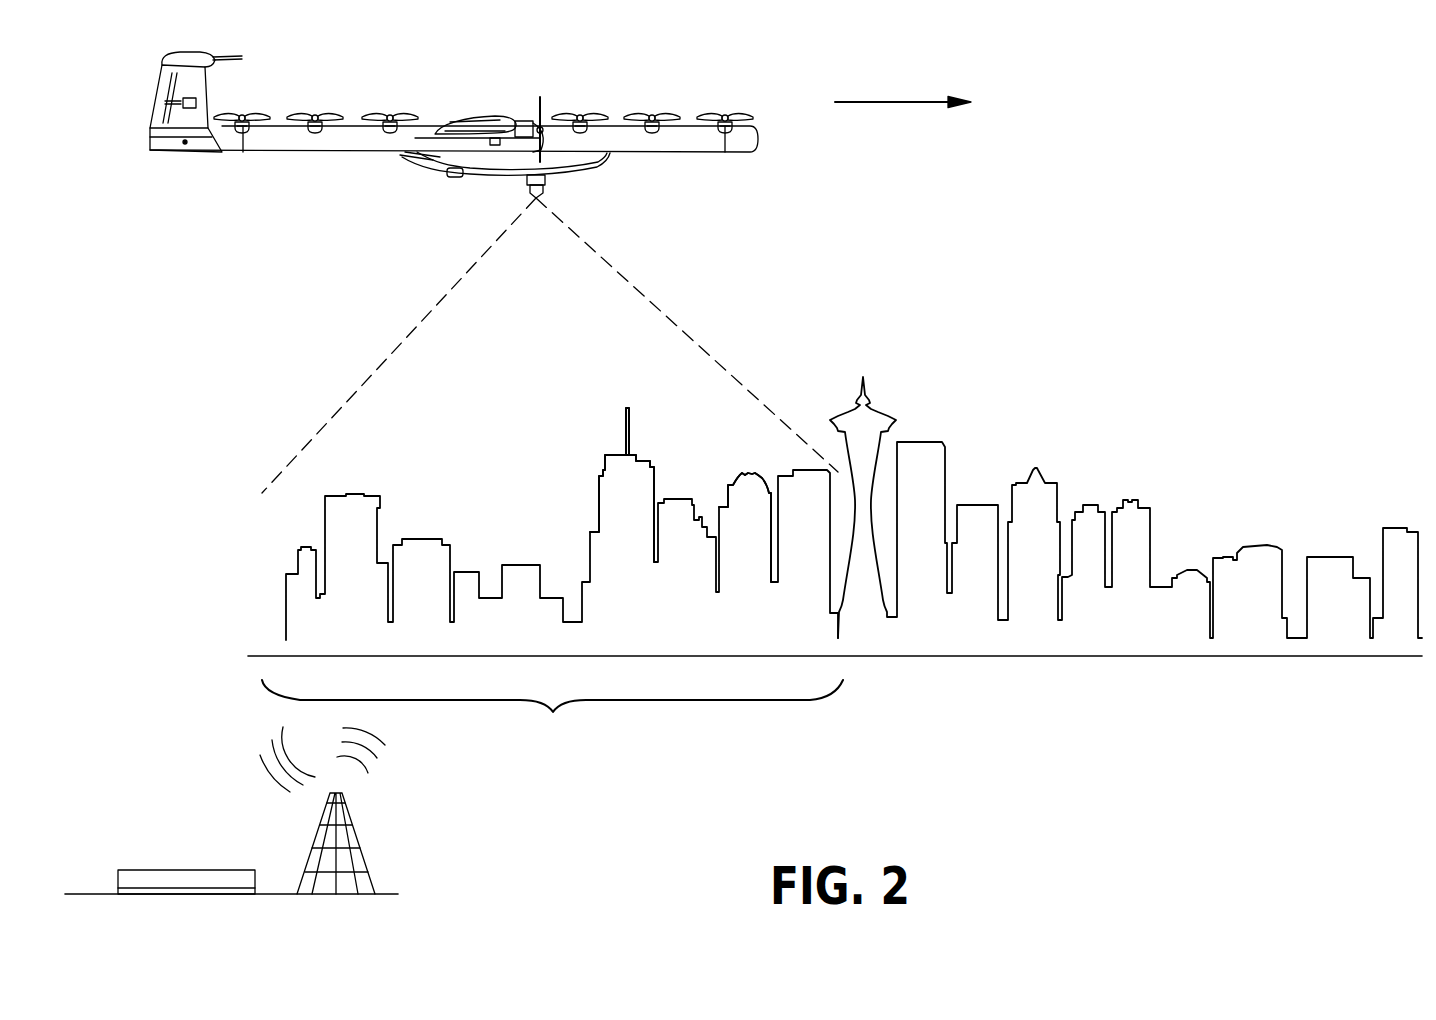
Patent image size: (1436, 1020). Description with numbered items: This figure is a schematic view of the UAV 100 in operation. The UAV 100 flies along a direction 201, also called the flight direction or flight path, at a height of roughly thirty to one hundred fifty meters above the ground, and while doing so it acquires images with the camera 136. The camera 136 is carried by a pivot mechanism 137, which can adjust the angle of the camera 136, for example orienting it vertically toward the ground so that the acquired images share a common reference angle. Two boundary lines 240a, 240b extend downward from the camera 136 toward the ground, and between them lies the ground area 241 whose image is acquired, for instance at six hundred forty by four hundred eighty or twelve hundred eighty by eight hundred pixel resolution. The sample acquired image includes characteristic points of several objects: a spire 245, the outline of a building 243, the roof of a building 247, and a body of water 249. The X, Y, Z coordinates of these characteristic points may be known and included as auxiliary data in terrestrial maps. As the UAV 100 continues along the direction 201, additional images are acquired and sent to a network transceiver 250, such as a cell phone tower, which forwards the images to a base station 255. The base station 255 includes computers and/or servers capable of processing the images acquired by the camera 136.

The UAV 100 is at (233, 165).
The camera 136 is at (529, 190).
The pivot mechanism 137 is at (547, 179).
The direction 201 is at (887, 103).
The field of view boundary 240a is at (455, 278).
The field of view boundary 240b is at (628, 282).
The ground area 241 is at (552, 568).
The outline of a building 243 is at (603, 465).
The spire 245 is at (626, 413).
The roof of a building 247 is at (733, 478).
The body of water 249 is at (807, 673).
The network transceiver 250 is at (355, 822).
The base station 255 is at (165, 870).